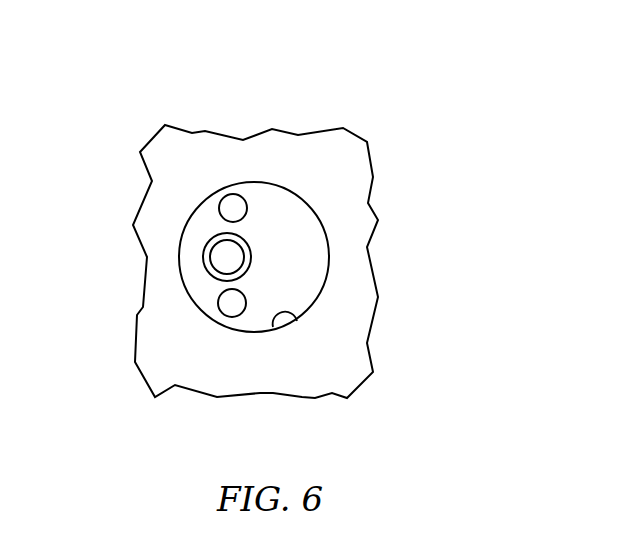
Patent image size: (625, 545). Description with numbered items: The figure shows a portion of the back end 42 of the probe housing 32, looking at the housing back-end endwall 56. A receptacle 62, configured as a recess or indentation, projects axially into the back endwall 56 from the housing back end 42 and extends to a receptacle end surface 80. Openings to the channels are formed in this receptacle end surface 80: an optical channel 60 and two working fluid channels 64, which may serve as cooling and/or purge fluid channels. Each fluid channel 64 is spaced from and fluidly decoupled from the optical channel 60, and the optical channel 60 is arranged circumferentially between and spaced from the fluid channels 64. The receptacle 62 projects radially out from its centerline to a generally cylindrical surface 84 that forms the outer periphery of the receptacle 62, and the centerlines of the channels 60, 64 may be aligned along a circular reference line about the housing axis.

The probe housing 32 is at (290, 223).
The back end 42 is at (357, 318).
The housing back-end endwall 56 is at (366, 125).
The optical channel 60 is at (194, 256).
The receptacle 62 is at (322, 199).
The working fluid channels 64 is at (233, 189).
The receptacle end surface 80 is at (313, 253).
The surface 84 is at (298, 322).